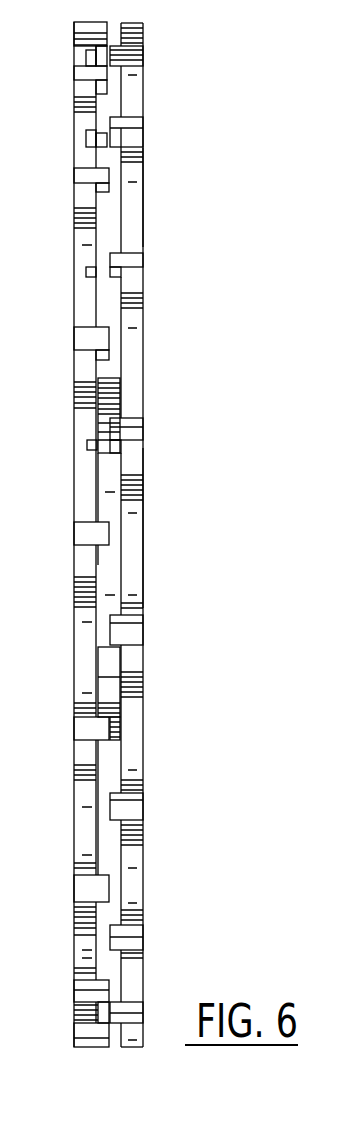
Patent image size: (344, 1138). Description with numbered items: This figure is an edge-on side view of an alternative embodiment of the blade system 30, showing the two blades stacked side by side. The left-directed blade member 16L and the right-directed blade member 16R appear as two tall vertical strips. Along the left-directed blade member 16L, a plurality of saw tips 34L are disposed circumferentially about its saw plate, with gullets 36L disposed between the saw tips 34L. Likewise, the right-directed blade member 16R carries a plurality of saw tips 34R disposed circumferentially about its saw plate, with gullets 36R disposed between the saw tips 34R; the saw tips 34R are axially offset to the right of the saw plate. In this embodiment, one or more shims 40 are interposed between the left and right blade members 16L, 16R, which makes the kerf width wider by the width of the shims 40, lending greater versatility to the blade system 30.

The blade system 30 is at (242, 36).
The right-directed blade member 16R is at (72, 303).
The left-directed blade member 16L is at (143, 375).
The saw tips 34R is at (76, 83).
The saw tips 34L is at (143, 137).
The gullets 36R is at (67, 183).
The gullets 36L is at (152, 148).
The shims 40 is at (118, 699).